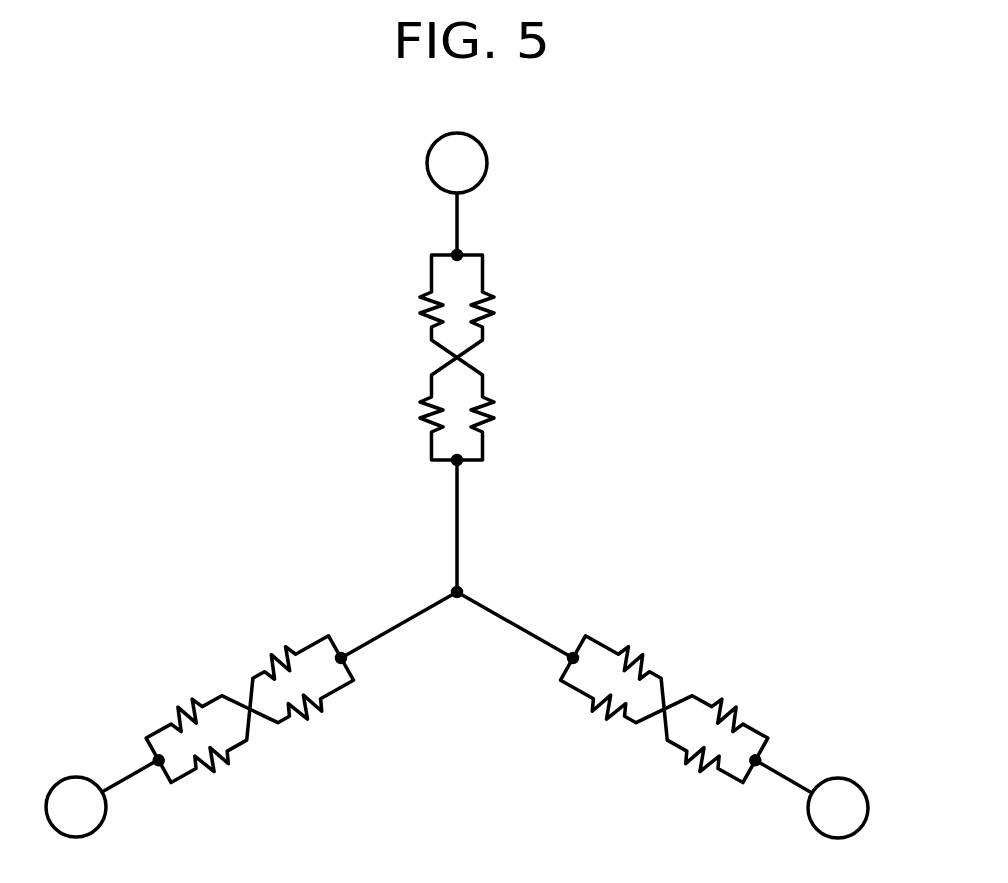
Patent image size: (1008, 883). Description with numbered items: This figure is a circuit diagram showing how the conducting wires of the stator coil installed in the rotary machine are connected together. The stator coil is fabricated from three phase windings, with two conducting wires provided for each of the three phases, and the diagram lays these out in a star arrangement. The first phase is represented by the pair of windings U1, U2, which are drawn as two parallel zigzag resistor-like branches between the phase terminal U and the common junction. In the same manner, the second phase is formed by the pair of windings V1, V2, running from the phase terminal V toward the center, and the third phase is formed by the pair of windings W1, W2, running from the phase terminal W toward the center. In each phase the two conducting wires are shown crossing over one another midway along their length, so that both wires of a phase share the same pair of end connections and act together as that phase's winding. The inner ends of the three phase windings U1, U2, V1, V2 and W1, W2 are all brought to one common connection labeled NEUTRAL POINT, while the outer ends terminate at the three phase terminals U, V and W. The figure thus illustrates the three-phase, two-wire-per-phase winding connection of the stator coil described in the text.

The U-phase terminal U is at (457, 194).
The V-phase terminal V is at (811, 799).
The W-phase terminal W is at (102, 798).
The phase winding U1 is at (432, 357).
The phase winding U2 is at (482, 357).
The phase winding V1 is at (664, 709).
The phase winding V2 is at (664, 709).
The phase winding W1 is at (250, 709).
The phase winding W2 is at (250, 709).
The neutral point of star connection NEUTRAL POINT is at (474, 584).